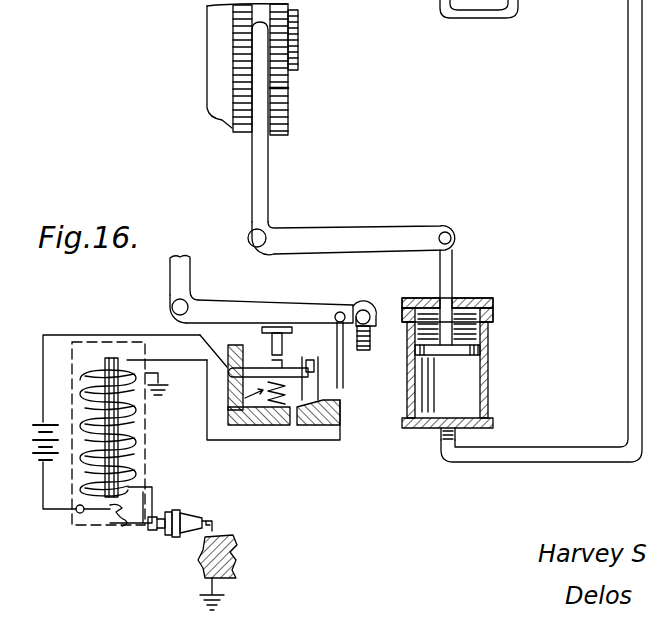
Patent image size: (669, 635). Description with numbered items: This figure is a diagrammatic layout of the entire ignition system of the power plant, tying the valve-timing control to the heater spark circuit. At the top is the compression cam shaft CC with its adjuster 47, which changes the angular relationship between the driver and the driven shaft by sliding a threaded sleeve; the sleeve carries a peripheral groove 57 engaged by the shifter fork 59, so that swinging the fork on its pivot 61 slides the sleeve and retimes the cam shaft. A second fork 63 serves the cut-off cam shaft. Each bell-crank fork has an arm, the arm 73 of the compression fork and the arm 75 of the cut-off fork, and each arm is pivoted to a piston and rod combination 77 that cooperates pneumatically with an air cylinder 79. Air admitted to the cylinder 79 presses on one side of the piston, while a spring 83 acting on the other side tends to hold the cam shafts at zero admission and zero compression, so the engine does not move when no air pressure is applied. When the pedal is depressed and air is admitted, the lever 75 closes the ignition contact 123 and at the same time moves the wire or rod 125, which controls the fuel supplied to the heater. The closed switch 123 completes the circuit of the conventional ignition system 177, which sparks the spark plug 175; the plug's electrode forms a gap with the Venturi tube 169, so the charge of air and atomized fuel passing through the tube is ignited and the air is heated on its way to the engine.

The compression cam shaft CC is at (296, 40).
The adjuster 47 is at (272, 115).
The peripheral groove 57 is at (286, 89).
The shifter fork 59 is at (266, 174).
The pivot 61 is at (250, 238).
The fork 63 is at (178, 277).
The arm 73 is at (366, 233).
The arm 75 is at (292, 294).
The piston and rod combination 77 is at (455, 273).
The air cylinder 79 is at (468, 388).
The spring 83 is at (489, 331).
The ignition contact 123 is at (245, 400).
The wire or rod 125 is at (344, 386).
The Venturi tube 169 is at (200, 570).
The spark plug 175 is at (200, 515).
The ignition system 177 is at (158, 468).